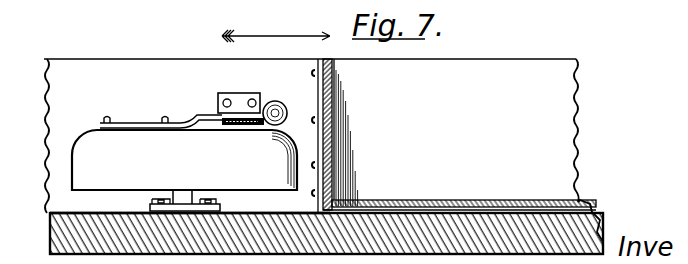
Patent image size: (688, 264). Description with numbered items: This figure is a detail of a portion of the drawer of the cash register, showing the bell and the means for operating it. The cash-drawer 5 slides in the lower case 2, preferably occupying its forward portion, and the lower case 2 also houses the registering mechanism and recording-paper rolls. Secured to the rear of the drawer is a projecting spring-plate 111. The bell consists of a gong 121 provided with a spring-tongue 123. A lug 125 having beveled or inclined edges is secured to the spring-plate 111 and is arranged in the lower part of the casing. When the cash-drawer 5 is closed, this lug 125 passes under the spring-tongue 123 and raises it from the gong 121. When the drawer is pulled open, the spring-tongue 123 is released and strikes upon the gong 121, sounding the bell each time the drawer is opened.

The lower case 2 is at (590, 222).
The cash-drawer 5 is at (454, 135).
The spring-plate 111 is at (196, 83).
The gong 121 is at (184, 170).
The spring-tongue 123 is at (204, 116).
The lug 125 is at (254, 128).